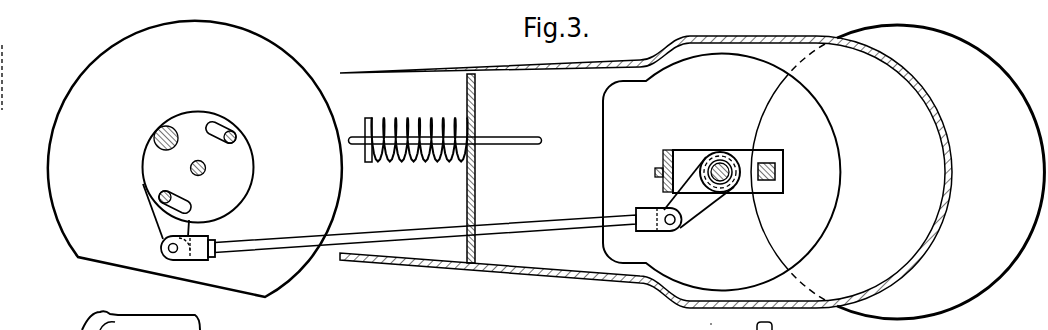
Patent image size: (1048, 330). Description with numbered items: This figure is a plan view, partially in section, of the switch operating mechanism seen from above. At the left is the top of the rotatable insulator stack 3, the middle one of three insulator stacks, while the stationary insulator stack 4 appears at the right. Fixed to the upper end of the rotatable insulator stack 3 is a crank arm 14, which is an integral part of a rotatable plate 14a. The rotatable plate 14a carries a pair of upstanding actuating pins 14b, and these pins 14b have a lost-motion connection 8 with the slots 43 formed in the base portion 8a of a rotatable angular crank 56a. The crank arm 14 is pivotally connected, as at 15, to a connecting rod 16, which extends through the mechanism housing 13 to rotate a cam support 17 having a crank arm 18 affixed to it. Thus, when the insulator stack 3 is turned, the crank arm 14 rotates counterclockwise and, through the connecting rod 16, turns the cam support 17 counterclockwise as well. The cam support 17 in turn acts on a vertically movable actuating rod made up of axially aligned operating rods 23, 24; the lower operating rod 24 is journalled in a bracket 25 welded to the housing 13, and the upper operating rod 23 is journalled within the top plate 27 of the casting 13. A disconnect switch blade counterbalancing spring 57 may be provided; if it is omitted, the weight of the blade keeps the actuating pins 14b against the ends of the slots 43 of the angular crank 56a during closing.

The rotatable insulator stack 3 is at (53, 220).
The insulator stack 4 is at (973, 290).
The lost-motion connection 8 is at (198, 200).
The base portion 8a is at (247, 167).
The mechanism housing 13 is at (448, 270).
The crank arm 14 is at (157, 222).
The rotatable plate 14a is at (218, 126).
The actuating pins 14b is at (240, 140).
The pivotal connection 15 is at (176, 253).
The connecting rod 16 is at (380, 232).
The cam support 17 is at (718, 150).
The crank arm 18 is at (689, 213).
The upper operating rod 23 is at (773, 325).
The lower operating rod 24 is at (776, 170).
The bracket 25 is at (742, 193).
The top plate 27 is at (722, 324).
The slots 43 is at (220, 138).
The angular crank 56a is at (160, 132).
The counterbalancing spring 57 is at (407, 117).